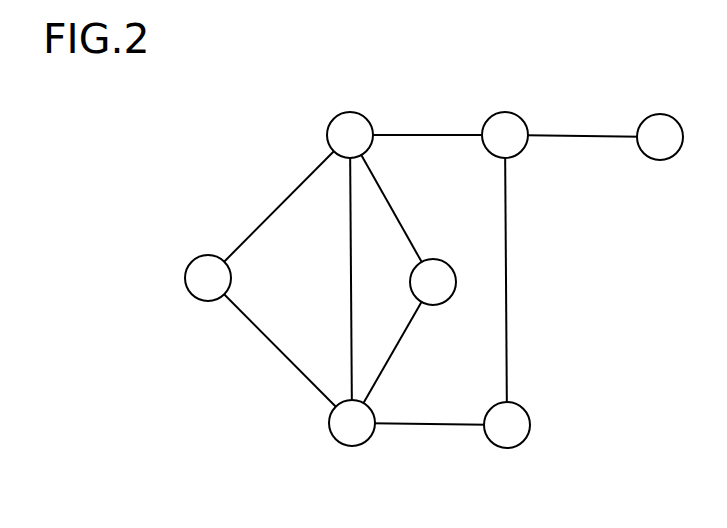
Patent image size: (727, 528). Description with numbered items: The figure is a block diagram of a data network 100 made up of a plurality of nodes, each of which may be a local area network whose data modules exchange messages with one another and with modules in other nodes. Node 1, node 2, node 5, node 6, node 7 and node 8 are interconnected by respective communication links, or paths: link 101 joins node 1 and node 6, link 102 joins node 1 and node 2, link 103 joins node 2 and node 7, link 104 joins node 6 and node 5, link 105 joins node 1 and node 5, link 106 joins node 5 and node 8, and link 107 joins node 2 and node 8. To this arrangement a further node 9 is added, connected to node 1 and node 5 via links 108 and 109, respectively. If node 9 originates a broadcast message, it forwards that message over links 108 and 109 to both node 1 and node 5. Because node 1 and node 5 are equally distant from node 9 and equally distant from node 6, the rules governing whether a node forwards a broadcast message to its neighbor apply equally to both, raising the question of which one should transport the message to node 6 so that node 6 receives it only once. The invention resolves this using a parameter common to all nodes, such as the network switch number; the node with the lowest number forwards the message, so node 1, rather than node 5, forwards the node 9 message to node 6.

The data network 100 is at (117, 105).
The node 1 is at (350, 106).
The node 2 is at (505, 106).
The node 5 is at (347, 455).
The node 6 is at (185, 278).
The node 7 is at (663, 109).
The node 8 is at (517, 457).
The node 9 is at (448, 261).
The communication link 101 is at (279, 206).
The communication link 102 is at (427, 97).
The communication link 103 is at (582, 98).
The communication link 104 is at (280, 352).
The communication link 105 is at (313, 279).
The communication link 106 is at (429, 464).
The communication link 107 is at (543, 280).
The link 108 is at (413, 208).
The link 109 is at (409, 352).